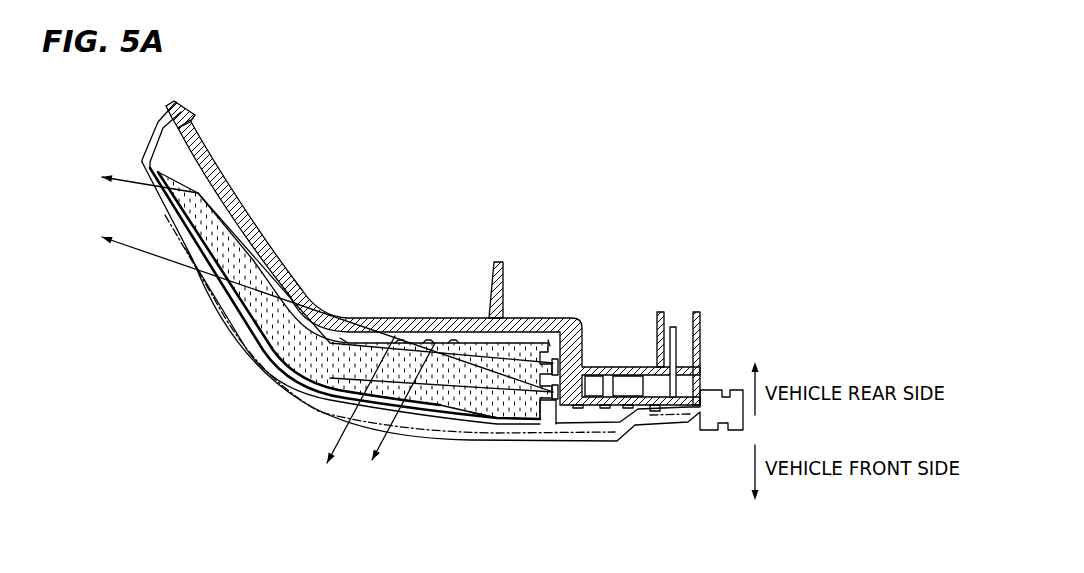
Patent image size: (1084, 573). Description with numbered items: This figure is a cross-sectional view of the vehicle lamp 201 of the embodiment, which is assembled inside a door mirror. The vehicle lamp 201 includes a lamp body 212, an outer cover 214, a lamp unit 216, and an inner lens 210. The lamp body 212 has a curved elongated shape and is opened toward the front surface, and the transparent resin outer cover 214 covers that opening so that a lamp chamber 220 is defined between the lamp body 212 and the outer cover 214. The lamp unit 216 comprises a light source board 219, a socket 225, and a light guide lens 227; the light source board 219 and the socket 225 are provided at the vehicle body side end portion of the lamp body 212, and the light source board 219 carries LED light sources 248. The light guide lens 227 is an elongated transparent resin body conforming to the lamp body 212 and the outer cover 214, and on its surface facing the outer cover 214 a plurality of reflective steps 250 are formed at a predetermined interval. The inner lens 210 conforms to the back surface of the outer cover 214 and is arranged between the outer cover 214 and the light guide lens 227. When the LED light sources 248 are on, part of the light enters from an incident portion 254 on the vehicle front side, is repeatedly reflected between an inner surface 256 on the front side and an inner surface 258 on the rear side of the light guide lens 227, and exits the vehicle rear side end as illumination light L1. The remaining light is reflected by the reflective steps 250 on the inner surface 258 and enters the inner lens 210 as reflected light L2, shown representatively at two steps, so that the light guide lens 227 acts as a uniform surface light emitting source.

The vehicle lamp 201 is at (300, 423).
The inner lens 210 is at (236, 300).
The lamp body 212 is at (302, 293).
The outer cover 214 is at (142, 153).
The lamp unit 216 is at (484, 335).
The light source board 219 is at (558, 412).
The lamp chamber 220 is at (354, 284).
The socket 225 is at (701, 333).
The light guide lens 227 is at (494, 414).
The LED light sources 248 is at (560, 396).
The reflective steps 250 is at (452, 347).
The incident portion 254 is at (344, 330).
The inner surface on the front side 256 is at (285, 348).
The inner surface of the rear side 258 is at (270, 268).
The illumination light L1 is at (128, 240).
The reflected light L2 is at (388, 430).